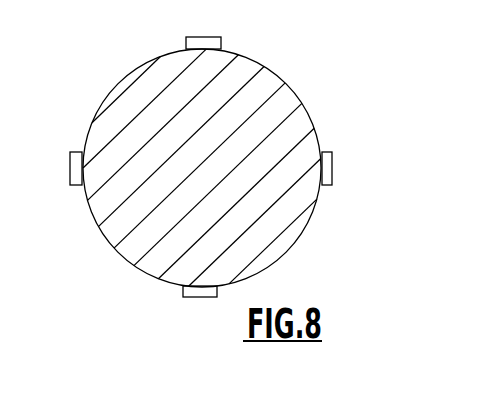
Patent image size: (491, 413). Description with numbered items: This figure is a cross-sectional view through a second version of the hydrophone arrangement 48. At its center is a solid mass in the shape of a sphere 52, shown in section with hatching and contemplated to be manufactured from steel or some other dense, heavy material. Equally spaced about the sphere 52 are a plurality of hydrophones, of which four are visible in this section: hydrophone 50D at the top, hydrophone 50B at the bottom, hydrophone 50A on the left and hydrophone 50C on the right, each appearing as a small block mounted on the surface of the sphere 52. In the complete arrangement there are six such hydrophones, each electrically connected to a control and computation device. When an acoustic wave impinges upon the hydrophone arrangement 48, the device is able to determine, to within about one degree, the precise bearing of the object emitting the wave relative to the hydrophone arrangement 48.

The hydrophone arrangement 48 is at (298, 73).
The sphere 52 is at (137, 77).
The hydrophone 50A is at (71, 174).
The hydrophone 50B is at (197, 298).
The hydrophone 50C is at (333, 174).
The hydrophone 50D is at (208, 37).